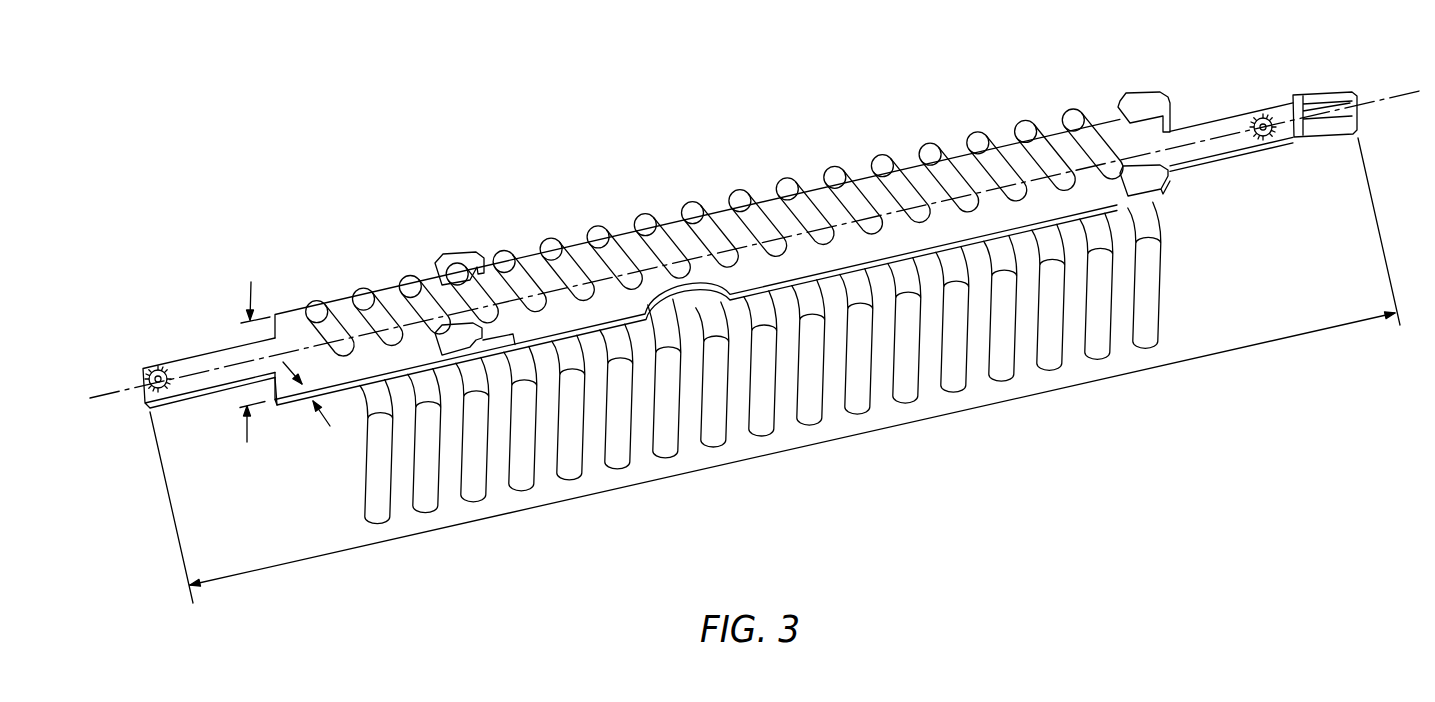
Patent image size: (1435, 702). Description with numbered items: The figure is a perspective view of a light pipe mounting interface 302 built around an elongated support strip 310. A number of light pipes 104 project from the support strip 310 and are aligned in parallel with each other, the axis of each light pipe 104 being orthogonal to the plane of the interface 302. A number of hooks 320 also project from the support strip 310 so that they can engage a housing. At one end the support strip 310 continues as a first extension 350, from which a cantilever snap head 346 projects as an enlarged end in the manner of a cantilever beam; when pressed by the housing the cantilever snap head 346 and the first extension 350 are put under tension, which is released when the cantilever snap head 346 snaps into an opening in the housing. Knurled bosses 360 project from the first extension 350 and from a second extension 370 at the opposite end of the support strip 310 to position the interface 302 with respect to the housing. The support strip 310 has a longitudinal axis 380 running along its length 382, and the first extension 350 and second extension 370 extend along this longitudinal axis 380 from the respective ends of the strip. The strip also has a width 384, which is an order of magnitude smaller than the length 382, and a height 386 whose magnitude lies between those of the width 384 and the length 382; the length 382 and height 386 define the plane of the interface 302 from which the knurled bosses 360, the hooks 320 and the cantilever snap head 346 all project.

The light pipe mounting interface 302 is at (187, 92).
The light pipes 104 is at (920, 150).
The support strip 310 is at (298, 304).
The hooks 320 is at (453, 252).
The cantilever snap head 346 is at (1332, 95).
The first extension 350 is at (1208, 123).
The knurled bosses 360 is at (145, 376).
The second extension 370 is at (211, 352).
The longitudinal axis 380 is at (115, 393).
The length 382 is at (800, 448).
The width 384 is at (330, 426).
The height 386 is at (246, 442).